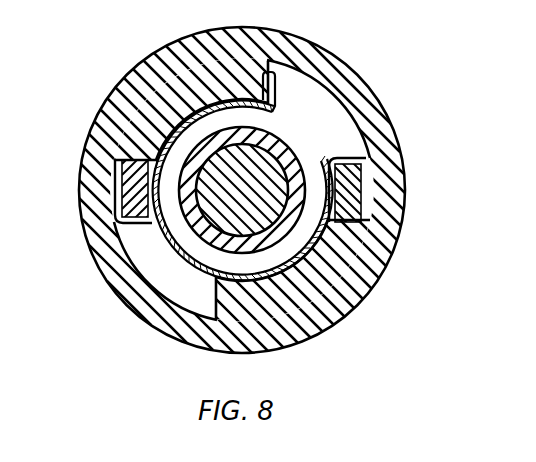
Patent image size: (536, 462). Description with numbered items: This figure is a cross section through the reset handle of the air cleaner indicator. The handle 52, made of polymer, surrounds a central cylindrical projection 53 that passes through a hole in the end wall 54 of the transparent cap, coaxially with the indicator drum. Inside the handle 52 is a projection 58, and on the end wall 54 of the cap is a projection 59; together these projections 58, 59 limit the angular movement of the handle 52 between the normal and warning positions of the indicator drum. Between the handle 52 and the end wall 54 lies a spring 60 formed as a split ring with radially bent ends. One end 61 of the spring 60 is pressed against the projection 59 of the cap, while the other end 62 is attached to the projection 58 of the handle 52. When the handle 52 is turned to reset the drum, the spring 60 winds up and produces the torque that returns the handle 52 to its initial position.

The handle 52 is at (386, 130).
The cylindrical projection 53 is at (268, 172).
The end wall 54 is at (190, 262).
The projection 58 is at (135, 142).
The projection 59 is at (138, 212).
The spring 60 is at (331, 312).
The end 61 is at (341, 157).
The end 62 is at (274, 90).